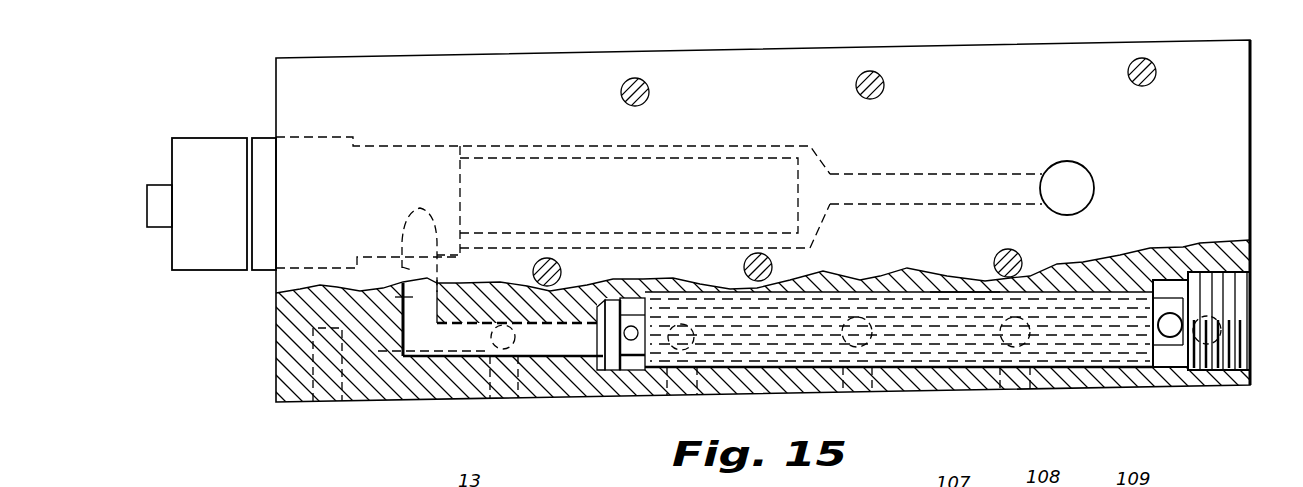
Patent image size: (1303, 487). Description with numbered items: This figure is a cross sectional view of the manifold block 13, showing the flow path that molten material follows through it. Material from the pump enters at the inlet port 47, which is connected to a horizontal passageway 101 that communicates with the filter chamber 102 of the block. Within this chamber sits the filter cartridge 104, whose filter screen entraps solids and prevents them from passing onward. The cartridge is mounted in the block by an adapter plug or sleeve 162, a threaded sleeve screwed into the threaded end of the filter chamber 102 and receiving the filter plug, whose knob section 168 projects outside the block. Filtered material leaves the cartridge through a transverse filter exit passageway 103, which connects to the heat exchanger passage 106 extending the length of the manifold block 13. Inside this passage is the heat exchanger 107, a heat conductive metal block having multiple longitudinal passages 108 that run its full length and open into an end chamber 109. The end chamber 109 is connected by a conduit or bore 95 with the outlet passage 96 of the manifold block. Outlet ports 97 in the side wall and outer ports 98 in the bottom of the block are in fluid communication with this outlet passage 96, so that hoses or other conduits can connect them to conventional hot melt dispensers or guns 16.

The manifold block 13 is at (969, 84).
The knob section 168 is at (198, 165).
The adapter plug or sleeve 162 is at (262, 148).
The filter chamber 102 is at (690, 140).
The filter cartridge 104 is at (626, 152).
The horizontal passageway 101 is at (999, 150).
The inlet port 47 is at (1084, 169).
The transverse filter exit passageway 103 is at (383, 292).
The outlet ports 98 is at (512, 337).
The outlet ports 97 is at (503, 400).
The outlet passage 96 is at (612, 398).
The heat exchanger passage 106 is at (632, 298).
The heat exchanger 107 is at (852, 292).
The longitudinal passages 108 is at (950, 292).
The end chamber 109 is at (1172, 358).
The conduit or bore 95 is at (1176, 272).
The hot melt dispensers or guns 16 is at (274, 340).